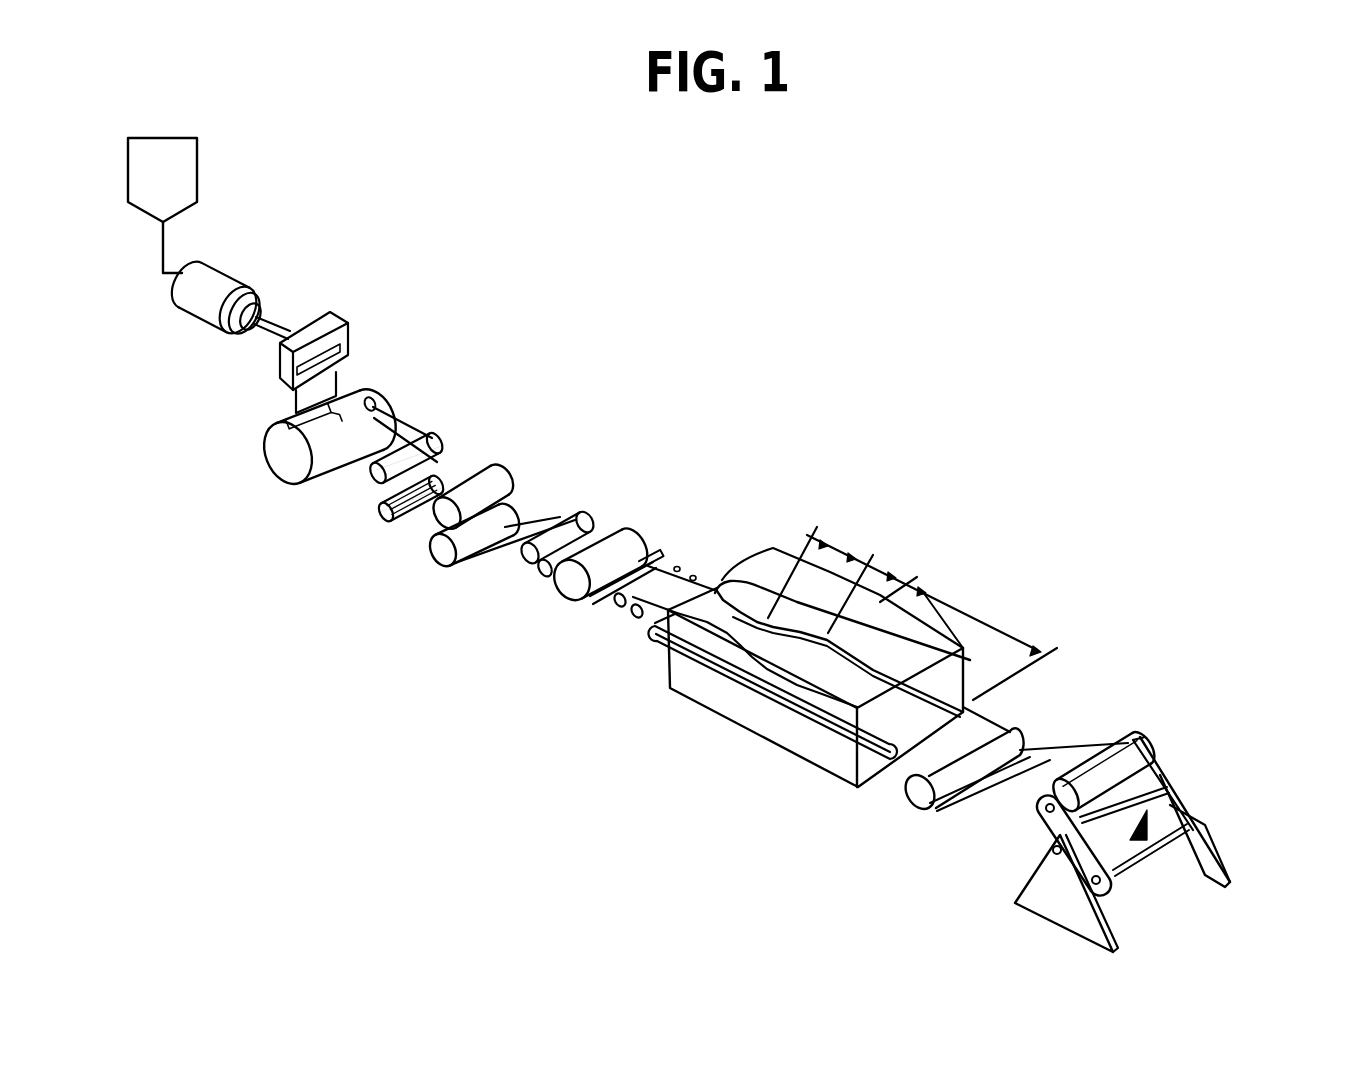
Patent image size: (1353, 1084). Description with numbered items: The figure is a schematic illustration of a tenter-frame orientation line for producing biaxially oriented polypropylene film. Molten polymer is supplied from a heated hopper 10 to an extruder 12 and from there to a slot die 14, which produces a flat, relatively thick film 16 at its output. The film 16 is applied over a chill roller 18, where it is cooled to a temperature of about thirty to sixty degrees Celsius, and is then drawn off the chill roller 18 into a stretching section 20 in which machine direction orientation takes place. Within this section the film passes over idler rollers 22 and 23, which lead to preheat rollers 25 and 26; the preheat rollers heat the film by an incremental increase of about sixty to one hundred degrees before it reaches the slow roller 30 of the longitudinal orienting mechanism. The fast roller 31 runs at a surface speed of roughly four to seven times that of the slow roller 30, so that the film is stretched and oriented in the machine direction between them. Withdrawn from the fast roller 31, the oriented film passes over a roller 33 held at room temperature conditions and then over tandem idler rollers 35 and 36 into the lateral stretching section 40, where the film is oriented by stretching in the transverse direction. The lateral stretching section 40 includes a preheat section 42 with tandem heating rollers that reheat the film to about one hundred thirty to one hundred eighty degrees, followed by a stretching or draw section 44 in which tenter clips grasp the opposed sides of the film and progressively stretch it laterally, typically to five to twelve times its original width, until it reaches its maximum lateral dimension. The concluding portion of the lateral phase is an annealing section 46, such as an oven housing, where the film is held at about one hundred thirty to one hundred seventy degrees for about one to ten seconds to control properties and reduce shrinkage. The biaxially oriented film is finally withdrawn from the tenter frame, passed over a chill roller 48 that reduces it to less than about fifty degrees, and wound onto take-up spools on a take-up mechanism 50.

The heated hopper 10 is at (197, 163).
The extruder 12 is at (232, 270).
The slot die 14 is at (367, 327).
The film 16 is at (337, 374).
The chill roller 18 is at (287, 465).
The stretching section 20 is at (630, 520).
The idler roller 22 is at (376, 481).
The idler roller 23 is at (377, 516).
The preheat roller 25 is at (440, 525).
The preheat roller 26 is at (440, 563).
The slow roller 30 is at (524, 558).
The fast roller 31 is at (543, 575).
The roller 33 is at (637, 540).
The tandem idler roller 35 is at (614, 602).
The tandem idler roller 36 is at (633, 616).
The lateral stretching section 40 is at (1123, 608).
The preheat section 42 is at (823, 540).
The stretching or draw section 44 is at (897, 570).
The annealing section 46 is at (993, 623).
The chill roller 48 is at (1010, 731).
The take-up mechanism 50 is at (1200, 773).